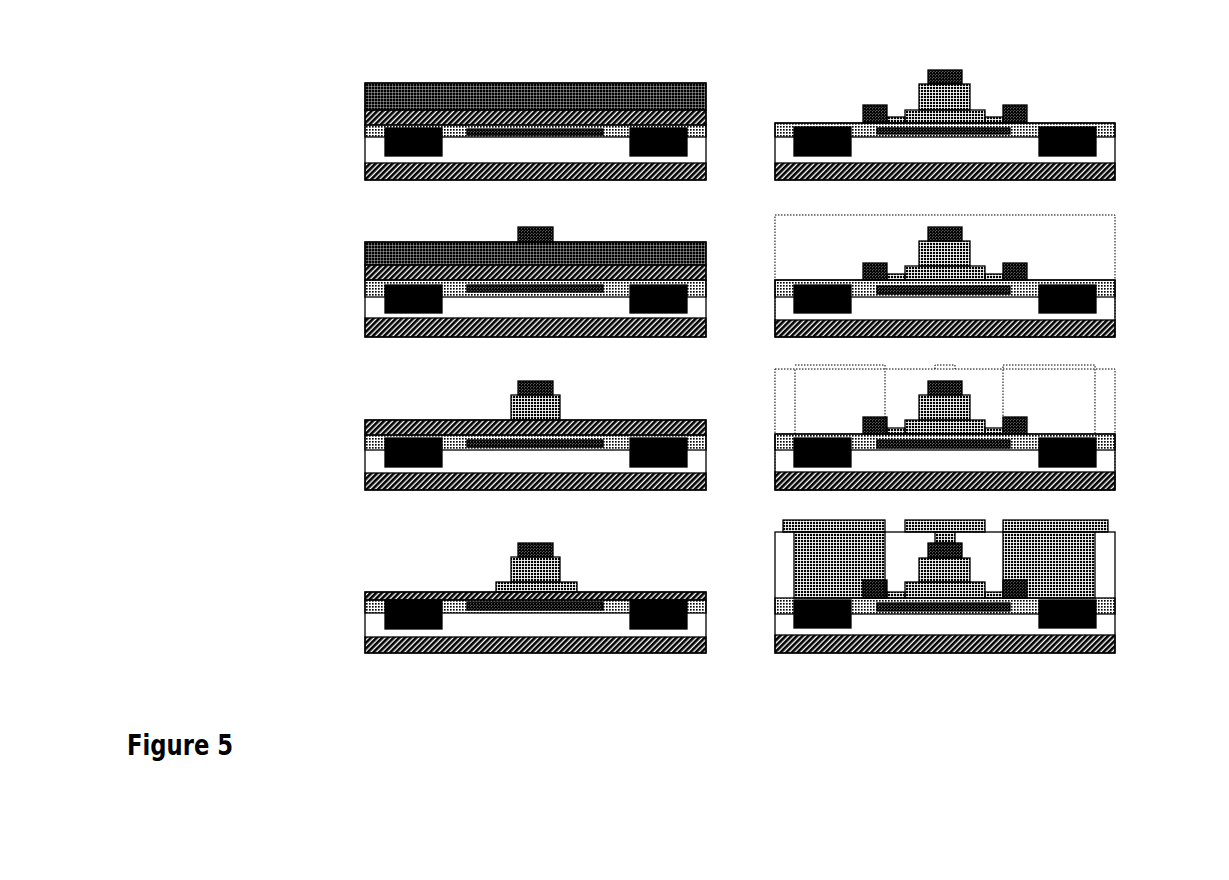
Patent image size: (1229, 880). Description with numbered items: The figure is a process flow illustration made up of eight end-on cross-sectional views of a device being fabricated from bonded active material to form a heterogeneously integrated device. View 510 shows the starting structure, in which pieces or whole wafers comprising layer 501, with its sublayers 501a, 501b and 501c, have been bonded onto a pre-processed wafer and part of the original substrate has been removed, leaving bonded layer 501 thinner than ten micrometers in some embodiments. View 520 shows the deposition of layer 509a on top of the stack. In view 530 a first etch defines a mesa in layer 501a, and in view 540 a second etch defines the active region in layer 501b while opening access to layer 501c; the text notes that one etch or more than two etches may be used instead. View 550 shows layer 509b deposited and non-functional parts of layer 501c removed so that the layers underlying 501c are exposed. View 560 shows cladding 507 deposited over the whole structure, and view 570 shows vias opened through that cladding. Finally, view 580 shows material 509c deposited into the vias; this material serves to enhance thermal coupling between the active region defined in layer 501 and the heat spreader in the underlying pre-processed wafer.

The bonded layer 501 is at (672, 53).
The first sublayer of layer 501 501a is at (483, 95).
The second sublayer of layer 501 501b is at (517, 115).
The third sublayer of layer 501 501c is at (572, 123).
The cladding 507 is at (890, 222).
The layer 509a is at (520, 233).
The layer 509b is at (1020, 108).
The material 509c is at (817, 523).
The view 510 is at (375, 75).
The view 520 is at (375, 233).
The view 530 is at (376, 408).
The view 540 is at (376, 579).
The view 550 is at (1108, 91).
The view 560 is at (1108, 252).
The view 570 is at (1108, 414).
The view 580 is at (1108, 564).